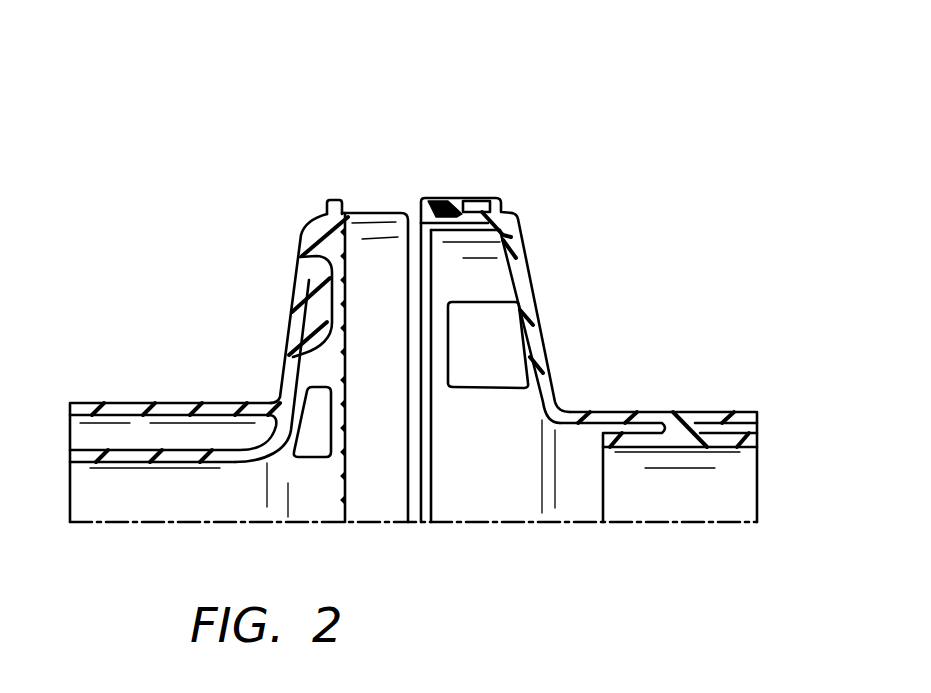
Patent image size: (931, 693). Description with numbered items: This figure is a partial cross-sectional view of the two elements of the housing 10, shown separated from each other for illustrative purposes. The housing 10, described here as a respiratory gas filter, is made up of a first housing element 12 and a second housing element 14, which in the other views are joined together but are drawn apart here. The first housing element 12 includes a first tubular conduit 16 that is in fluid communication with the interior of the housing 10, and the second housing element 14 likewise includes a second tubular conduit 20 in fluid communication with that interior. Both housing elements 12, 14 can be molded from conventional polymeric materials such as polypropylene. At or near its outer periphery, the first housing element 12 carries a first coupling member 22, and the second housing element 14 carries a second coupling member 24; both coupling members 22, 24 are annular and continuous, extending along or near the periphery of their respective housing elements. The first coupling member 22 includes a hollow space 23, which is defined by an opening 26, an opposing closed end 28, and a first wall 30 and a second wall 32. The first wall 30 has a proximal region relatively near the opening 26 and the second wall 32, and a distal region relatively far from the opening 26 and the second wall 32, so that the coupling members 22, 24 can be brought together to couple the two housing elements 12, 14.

The housing 10 is at (215, 183).
The first housing element 12 is at (568, 342).
The second housing element 14 is at (284, 301).
The first tubular conduit 16 is at (690, 412).
The second tubular conduit 20 is at (96, 401).
The first coupling member 22 is at (470, 192).
The hollow space 23 is at (512, 230).
The second coupling member 24 is at (349, 208).
The opening 26 is at (427, 216).
The closed end 28 is at (512, 212).
The first wall 30 is at (446, 200).
The second wall 32 is at (443, 230).